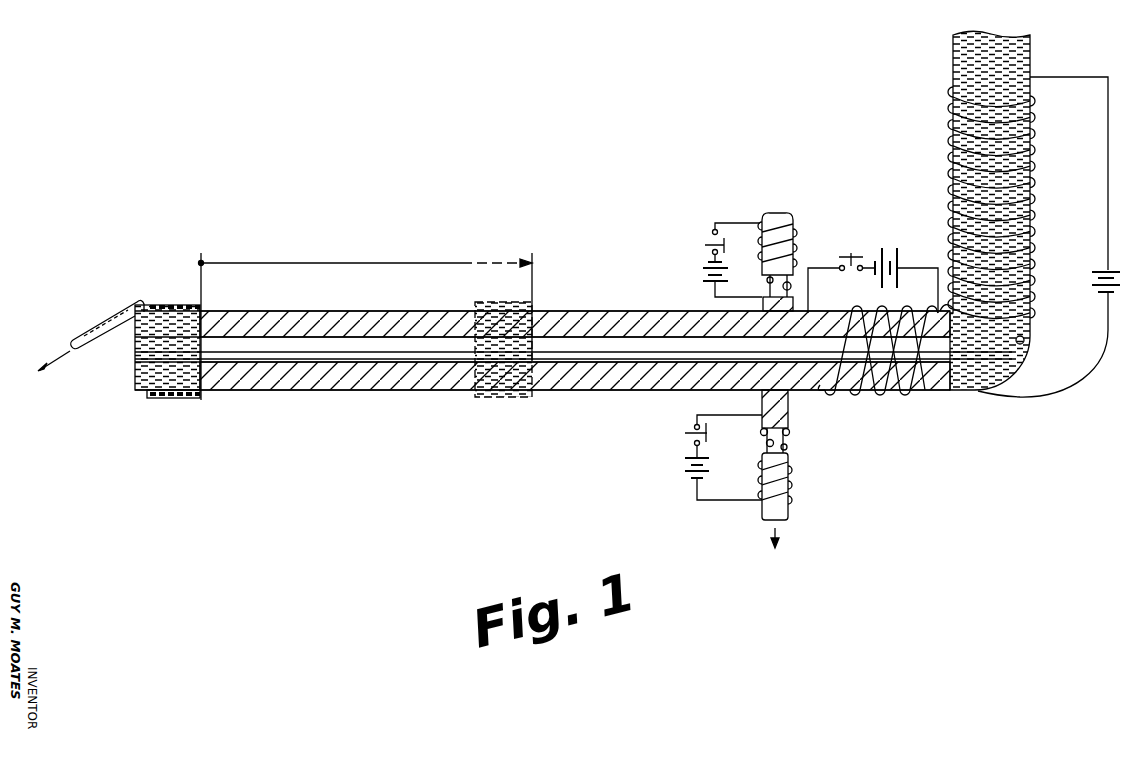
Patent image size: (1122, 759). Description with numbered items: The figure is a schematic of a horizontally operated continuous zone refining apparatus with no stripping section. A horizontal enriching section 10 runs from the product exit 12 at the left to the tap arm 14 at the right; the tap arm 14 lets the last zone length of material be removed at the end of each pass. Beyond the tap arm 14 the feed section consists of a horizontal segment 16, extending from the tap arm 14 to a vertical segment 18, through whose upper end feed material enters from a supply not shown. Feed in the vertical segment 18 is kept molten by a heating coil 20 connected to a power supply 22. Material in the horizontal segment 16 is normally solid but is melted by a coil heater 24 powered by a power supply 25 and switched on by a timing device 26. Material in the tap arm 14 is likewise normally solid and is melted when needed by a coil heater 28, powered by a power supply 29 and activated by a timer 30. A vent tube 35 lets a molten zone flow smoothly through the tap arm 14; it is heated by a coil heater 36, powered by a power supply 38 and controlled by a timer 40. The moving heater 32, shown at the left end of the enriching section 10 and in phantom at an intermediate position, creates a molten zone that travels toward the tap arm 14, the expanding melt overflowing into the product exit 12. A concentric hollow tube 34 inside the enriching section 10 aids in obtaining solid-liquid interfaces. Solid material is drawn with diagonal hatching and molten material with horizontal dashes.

The enriching section 10 is at (418, 391).
The product exit 12 is at (82, 326).
The tap arm 14 is at (789, 506).
The horizontal segment 16 is at (866, 378).
The vertical segment 18 is at (1034, 57).
The heating coil 20 is at (1048, 400).
The power supply 22 is at (1097, 296).
The coil heater 24 is at (838, 396).
The power supply 25 is at (887, 250).
The timing device 26 is at (850, 253).
The coil heater 28 is at (733, 501).
The power supply 29 is at (686, 479).
The timer 30 is at (690, 438).
The moving heater 32 is at (175, 399).
The concentric hollow tube 34 is at (298, 356).
The vent tube 35 is at (783, 216).
The coil heater 36 is at (738, 222).
The power supply 38 is at (703, 275).
The timer 40 is at (710, 237).